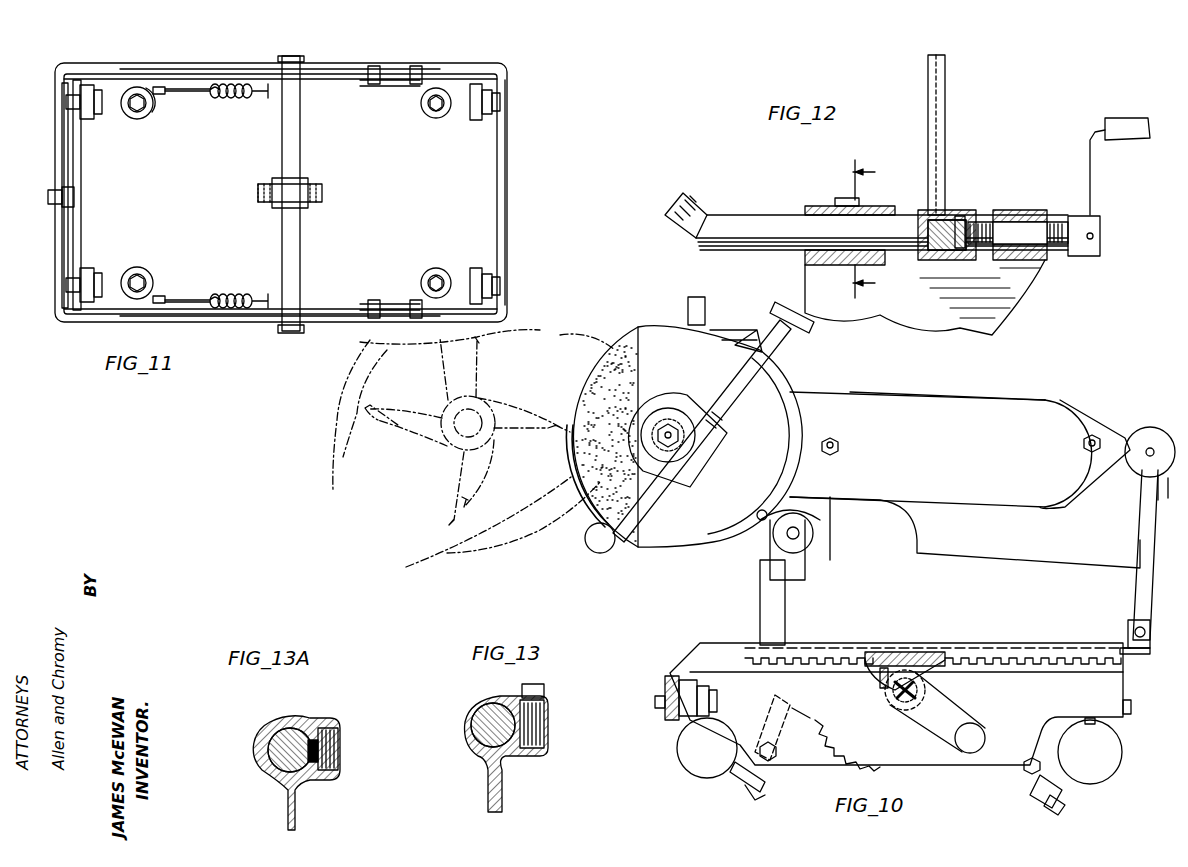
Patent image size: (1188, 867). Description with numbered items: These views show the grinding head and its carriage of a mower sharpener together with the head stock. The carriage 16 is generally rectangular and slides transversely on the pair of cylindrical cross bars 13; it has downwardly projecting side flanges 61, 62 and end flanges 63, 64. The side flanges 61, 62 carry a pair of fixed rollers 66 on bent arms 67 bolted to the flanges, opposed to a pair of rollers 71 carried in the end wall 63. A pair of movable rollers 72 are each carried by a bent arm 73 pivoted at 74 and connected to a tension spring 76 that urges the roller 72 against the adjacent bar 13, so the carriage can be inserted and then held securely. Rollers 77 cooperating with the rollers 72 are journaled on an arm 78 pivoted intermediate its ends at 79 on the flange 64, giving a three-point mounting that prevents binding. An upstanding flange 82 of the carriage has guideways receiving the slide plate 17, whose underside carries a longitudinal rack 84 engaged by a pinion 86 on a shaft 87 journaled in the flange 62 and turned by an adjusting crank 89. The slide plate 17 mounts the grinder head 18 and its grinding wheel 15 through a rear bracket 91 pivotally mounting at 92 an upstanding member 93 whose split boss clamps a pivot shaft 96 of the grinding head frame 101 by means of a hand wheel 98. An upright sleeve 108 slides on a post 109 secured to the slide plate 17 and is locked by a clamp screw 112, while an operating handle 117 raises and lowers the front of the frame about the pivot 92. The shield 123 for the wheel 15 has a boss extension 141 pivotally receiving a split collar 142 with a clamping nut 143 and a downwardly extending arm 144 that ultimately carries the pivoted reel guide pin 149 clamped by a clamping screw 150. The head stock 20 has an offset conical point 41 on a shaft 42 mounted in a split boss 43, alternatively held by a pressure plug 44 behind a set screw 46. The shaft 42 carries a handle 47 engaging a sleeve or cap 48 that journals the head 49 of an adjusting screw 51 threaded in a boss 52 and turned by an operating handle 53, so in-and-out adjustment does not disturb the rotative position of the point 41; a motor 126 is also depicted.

In FIG. 12, the cylindrical cross bars 13 is at (879, 229).
In FIG. 10, the cylindrical cross bars 13 is at (695, 774).
In FIG. 10, the grinding wheel 15 is at (626, 340).
In FIG. 11, the carriage 16 is at (510, 128).
In FIG. 10, the carriage 16 is at (686, 645).
In FIG. 10, the slide plate 17 is at (905, 652).
In FIG. 10, the grinder head 18 is at (838, 388).
In FIG. 12, the head stock 20 is at (1035, 284).
In FIG. 12, the offset conical point 41 is at (672, 200).
In FIG. 12, the shaft 42 is at (726, 215).
In FIG. 13A, the shaft 42 is at (268, 752).
In FIG. 13, the shaft 42 is at (480, 740).
In FIG. 12, the split boss 43 is at (820, 206).
In FIG. 13A, the split boss 43 is at (272, 725).
In FIG. 13, the split boss 43 is at (470, 712).
In FIG. 13A, the pressure plug 44 is at (315, 738).
In FIG. 13A, the set screw 46 is at (340, 754).
In FIG. 12, the handle 47 is at (947, 112).
In FIG. 12, the sleeve or cap 48 is at (965, 210).
In FIG. 12, the head of adjusting screw 49 is at (965, 248).
In FIG. 12, the adjusting screw 51 is at (1030, 225).
In FIG. 12, the boss 52 is at (1010, 210).
In FIG. 12, the operating handle 53 is at (1105, 132).
In FIG. 11, the side flange 61 is at (345, 316).
In FIG. 11, the side flange 62 is at (322, 73).
In FIG. 10, the side flange 62 is at (962, 760).
In FIG. 11, the end flange 63 is at (505, 210).
In FIG. 10, the end flange 63 is at (1128, 692).
In FIG. 11, the end flange 64 is at (62, 235).
In FIG. 10, the end flange 64 is at (665, 686).
In FIG. 11, the fixed rollers 66 is at (436, 118).
In FIG. 10, the fixed rollers 66 is at (1045, 800).
In FIG. 11, the bent arms 67 is at (398, 88).
In FIG. 10, the bent arms 67 is at (1038, 780).
In FIG. 11, the rollers 71 is at (470, 120).
In FIG. 10, the rollers 71 is at (1090, 724).
In FIG. 11, the movable rollers 72 is at (145, 112).
In FIG. 10, the movable rollers 72 is at (768, 785).
In FIG. 11, the bent arm 73 is at (205, 93).
In FIG. 10, the bent arm 73 is at (775, 710).
In FIG. 11, the pivot 74 is at (162, 96).
In FIG. 10, the pivot 74 is at (777, 752).
In FIG. 11, the tension spring 76 is at (240, 96).
In FIG. 10, the tension spring 76 is at (846, 730).
In FIG. 11, the rollers 77 is at (87, 118).
In FIG. 10, the rollers 77 is at (707, 748).
In FIG. 11, the arm 78 is at (81, 156).
In FIG. 10, the arm 78 is at (690, 716).
In FIG. 11, the pivot 79 is at (76, 198).
In FIG. 10, the pivot 79 is at (657, 706).
In FIG. 10, the upstanding wall or flange 82 is at (815, 648).
In FIG. 10, the longitudinal rack 84 is at (930, 680).
In FIG. 11, the pinion 86 is at (322, 195).
In FIG. 10, the pinion 86 is at (880, 686).
In FIG. 11, the shaft 87 is at (300, 158).
In FIG. 10, the shaft 87 is at (918, 697).
In FIG. 10, the adjusting crank 89 is at (955, 740).
In FIG. 10, the bracket 91 is at (1150, 636).
In FIG. 10, the pivot 92 is at (1134, 626).
In FIG. 10, the upstanding member 93 is at (1140, 586).
In FIG. 10, the pivot shaft 96 is at (1168, 495).
In FIG. 10, the hand wheel 98 is at (1150, 432).
In FIG. 10, the grinding head frame 101 is at (1035, 541).
In FIG. 10, the upright sleeve 108 is at (760, 550).
In FIG. 10, the upright post 109 is at (785, 603).
In FIG. 10, the clamp screw 112 is at (813, 533).
In FIG. 10, the operating handle 117 is at (728, 332).
In FIG. 10, the shield 123 is at (768, 456).
In FIG. 10, the motor 126 is at (955, 484).
In FIG. 10, the boss extension 141 is at (672, 415).
In FIG. 10, the split collar 142 is at (693, 470).
In FIG. 10, the clamping nut 143 is at (812, 328).
In FIG. 10, the downwardly extending arm 144 is at (640, 508).
In FIG. 10, the reel guide pin 149 is at (565, 458).
In FIG. 10, the clamping screw 150 is at (588, 544).